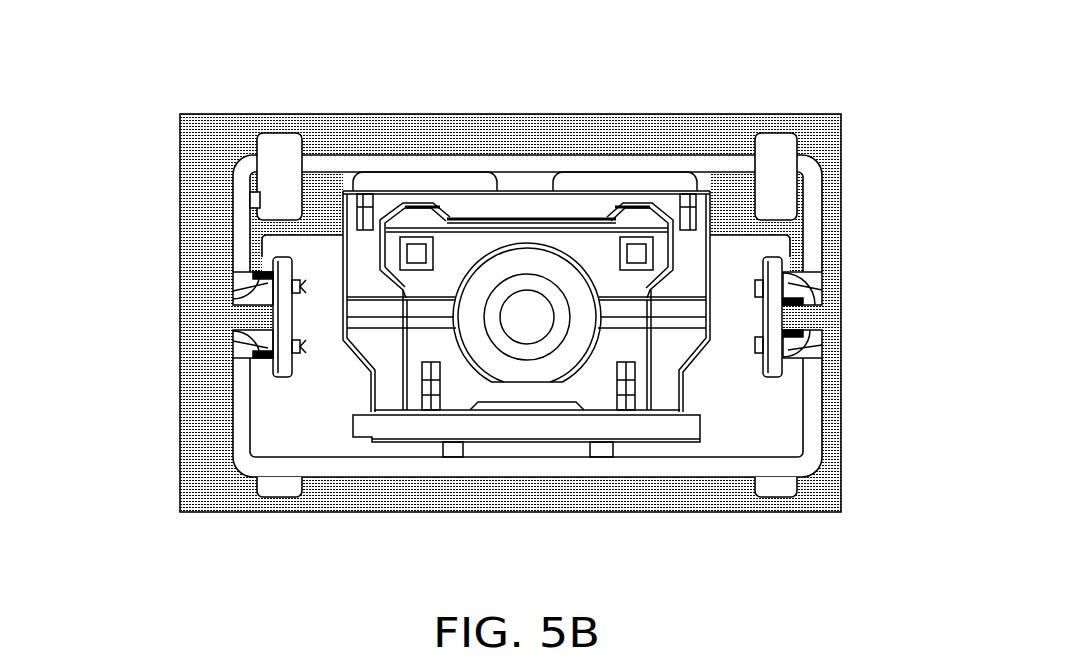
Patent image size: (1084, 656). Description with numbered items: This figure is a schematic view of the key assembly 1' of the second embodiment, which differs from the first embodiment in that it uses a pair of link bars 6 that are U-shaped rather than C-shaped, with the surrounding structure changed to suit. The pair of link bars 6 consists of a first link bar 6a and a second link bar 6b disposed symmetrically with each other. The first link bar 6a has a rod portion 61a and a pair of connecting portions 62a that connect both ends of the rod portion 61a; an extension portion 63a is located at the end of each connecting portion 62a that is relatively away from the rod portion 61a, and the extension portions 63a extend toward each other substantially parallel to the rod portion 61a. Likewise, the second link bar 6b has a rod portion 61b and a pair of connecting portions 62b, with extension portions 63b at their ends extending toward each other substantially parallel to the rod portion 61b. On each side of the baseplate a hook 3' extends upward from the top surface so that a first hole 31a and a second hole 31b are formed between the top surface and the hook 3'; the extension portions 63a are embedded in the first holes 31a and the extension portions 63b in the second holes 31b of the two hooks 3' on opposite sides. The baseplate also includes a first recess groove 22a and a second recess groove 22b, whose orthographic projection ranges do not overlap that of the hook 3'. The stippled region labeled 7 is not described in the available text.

The key assembly 1' is at (505, 308).
The hook 3' is at (529, 313).
The pair of link bars 6 is at (897, 23).
The first link bar 6a is at (448, 567).
The second link bar 6b is at (345, 55).
The filler body 7 is at (547, 143).
The first recess groove 22a is at (822, 337).
The second recess groove 22b is at (822, 297).
The first hole 31a is at (310, 343).
The second hole 31b is at (305, 290).
The rod portion 61a is at (433, 467).
The rod portion 61b is at (331, 164).
The connecting portions 62a is at (243, 425).
The connecting portions 62b is at (240, 220).
The extension portion 63a is at (233, 341).
The extension portion 63b is at (233, 295).